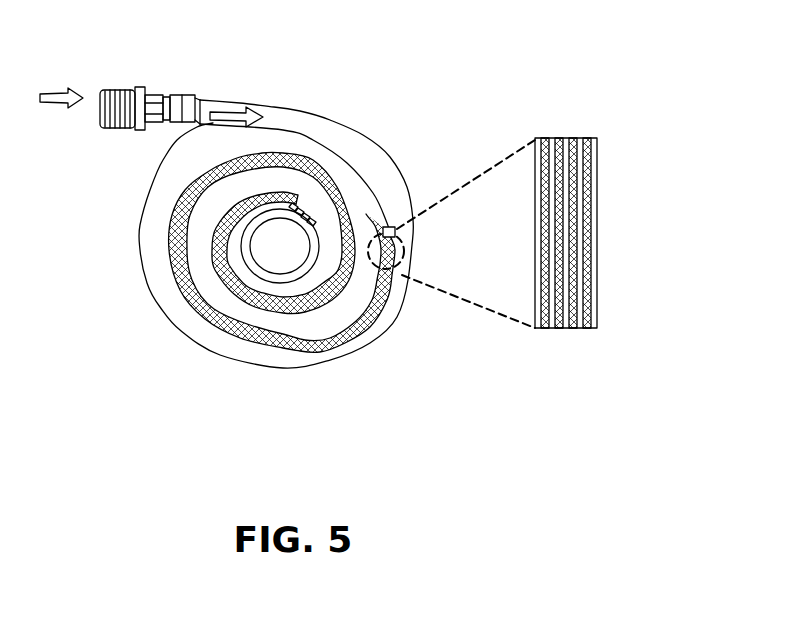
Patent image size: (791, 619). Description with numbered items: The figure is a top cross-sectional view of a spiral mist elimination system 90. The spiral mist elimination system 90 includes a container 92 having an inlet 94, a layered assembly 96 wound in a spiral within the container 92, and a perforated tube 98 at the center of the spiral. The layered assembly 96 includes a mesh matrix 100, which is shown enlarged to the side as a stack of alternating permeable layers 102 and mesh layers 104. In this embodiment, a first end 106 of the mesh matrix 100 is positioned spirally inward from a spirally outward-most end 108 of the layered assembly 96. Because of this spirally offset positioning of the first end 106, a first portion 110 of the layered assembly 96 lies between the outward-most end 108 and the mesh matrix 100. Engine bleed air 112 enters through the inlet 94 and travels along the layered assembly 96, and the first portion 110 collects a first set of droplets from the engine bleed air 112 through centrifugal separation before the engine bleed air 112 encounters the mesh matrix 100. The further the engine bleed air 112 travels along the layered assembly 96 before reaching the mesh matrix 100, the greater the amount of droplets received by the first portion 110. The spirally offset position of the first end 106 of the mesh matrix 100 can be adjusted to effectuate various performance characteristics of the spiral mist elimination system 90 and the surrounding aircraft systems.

The spiral mist elimination system 90 is at (159, 362).
The container 92 is at (140, 257).
The inlet 94 is at (124, 88).
The layered assembly 96 is at (200, 155).
The perforated tube 98 is at (284, 284).
The mesh matrix 100 is at (614, 182).
The permeable layers 102 is at (594, 332).
The mesh layers 104 is at (559, 332).
The first end 106 is at (373, 228).
The spirally outward-most end 108 is at (297, 127).
The first portion 110 is at (345, 140).
The engine bleed air 112 is at (60, 90).